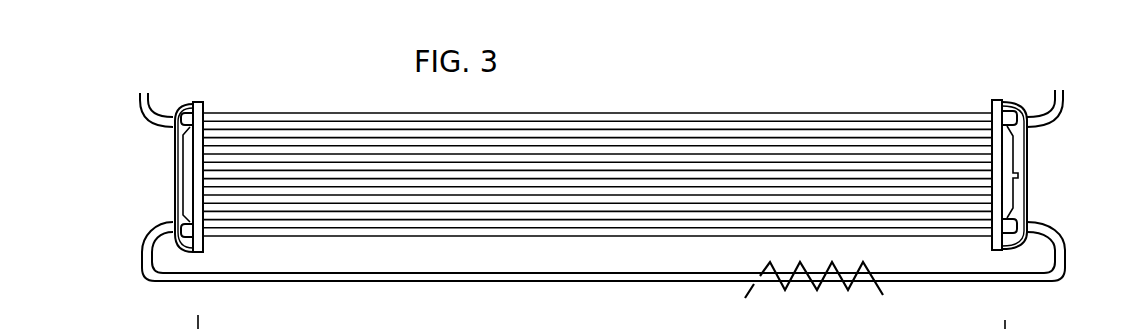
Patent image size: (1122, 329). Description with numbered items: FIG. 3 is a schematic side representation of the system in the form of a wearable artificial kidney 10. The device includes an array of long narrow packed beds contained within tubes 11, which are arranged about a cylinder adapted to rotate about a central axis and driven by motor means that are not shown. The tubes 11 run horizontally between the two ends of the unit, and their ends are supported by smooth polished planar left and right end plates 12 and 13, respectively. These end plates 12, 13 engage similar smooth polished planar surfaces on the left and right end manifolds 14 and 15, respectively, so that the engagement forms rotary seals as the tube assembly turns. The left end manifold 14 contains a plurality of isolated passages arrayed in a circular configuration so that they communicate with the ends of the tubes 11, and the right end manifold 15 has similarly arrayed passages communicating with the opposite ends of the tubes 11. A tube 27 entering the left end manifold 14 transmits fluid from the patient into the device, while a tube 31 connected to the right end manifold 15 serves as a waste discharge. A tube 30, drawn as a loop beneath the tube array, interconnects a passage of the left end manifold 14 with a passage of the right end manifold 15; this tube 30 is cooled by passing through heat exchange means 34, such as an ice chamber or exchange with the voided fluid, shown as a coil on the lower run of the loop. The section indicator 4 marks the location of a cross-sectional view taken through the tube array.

The section line 4- 4 is at (602, 253).
The wearable artificial kidney 10 is at (839, 108).
The tubes 11 is at (918, 115).
The left end plate 12 is at (205, 107).
The right end plate 13 is at (990, 105).
The left end manifold 14 is at (174, 148).
The right end manifold 15 is at (1028, 162).
The tube 27 is at (139, 106).
The tube 30 is at (417, 282).
The tube 31 is at (1067, 102).
The heat exchange means 34 is at (884, 291).